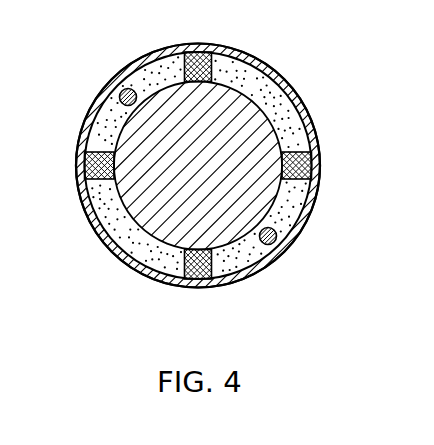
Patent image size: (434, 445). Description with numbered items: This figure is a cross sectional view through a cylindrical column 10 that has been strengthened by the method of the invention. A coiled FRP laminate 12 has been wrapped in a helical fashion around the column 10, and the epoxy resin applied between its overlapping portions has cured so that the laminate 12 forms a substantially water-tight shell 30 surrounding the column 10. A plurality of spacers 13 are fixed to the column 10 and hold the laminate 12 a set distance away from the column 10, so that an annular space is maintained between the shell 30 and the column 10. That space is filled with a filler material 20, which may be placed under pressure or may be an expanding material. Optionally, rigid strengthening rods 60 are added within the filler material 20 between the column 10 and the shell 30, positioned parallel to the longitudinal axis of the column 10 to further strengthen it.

The vertical column 10 is at (220, 105).
The coiled FRP laminate 12 is at (312, 120).
The spacers 13 is at (200, 275).
The filler material 20 is at (157, 68).
The shell 30 is at (81, 195).
The rigid strengthening rods 60 is at (120, 93).